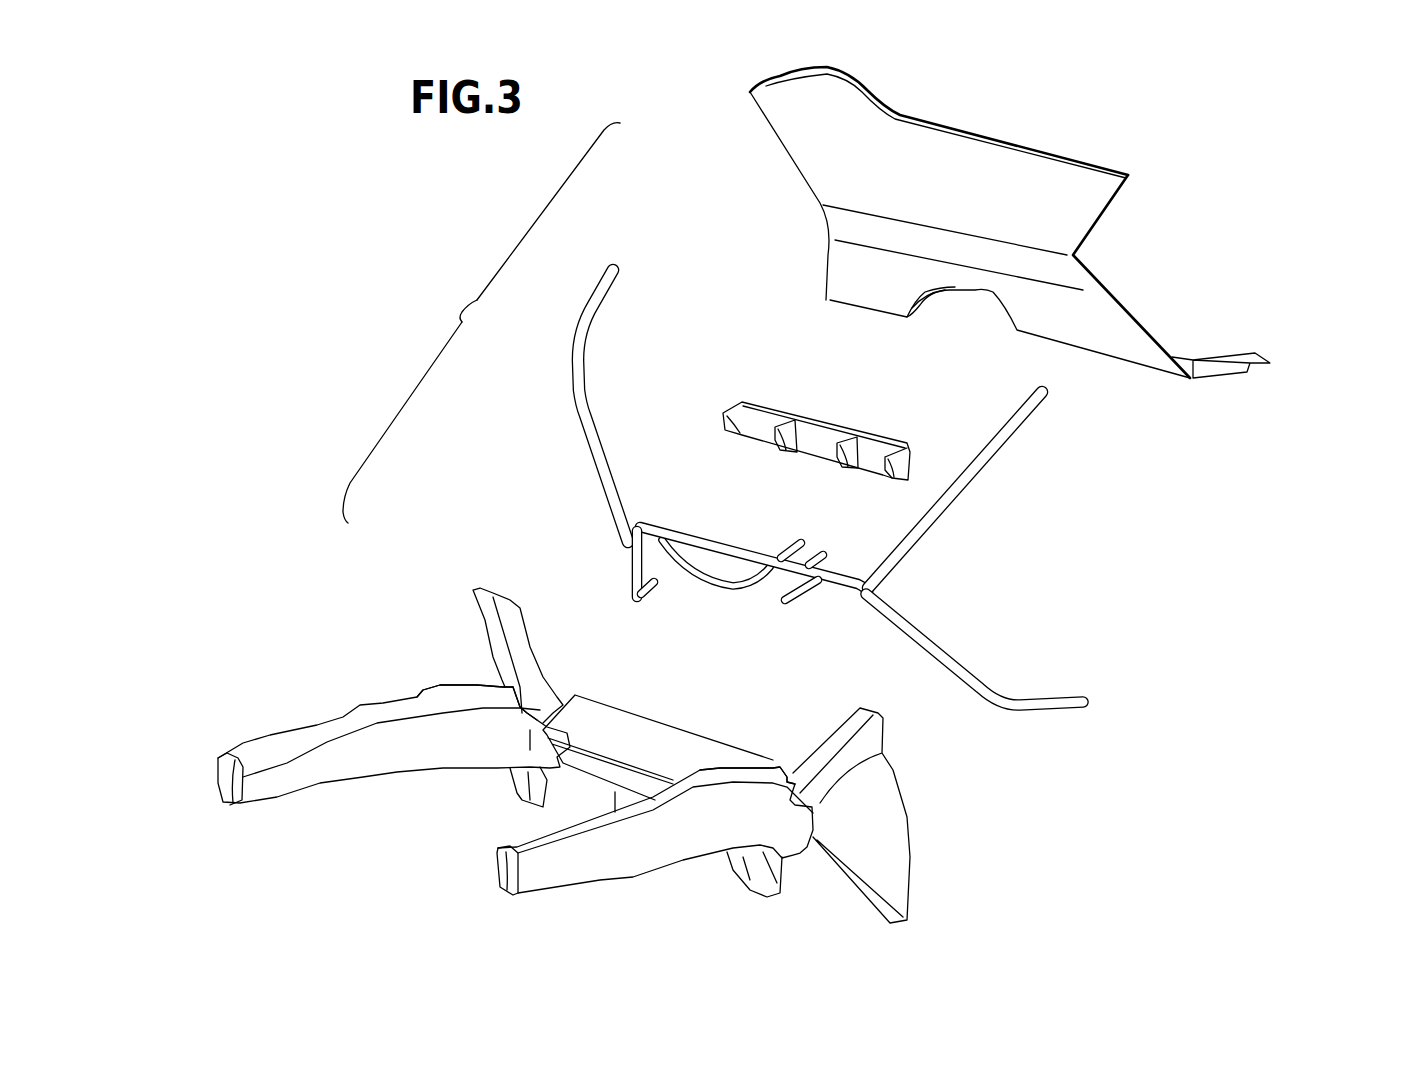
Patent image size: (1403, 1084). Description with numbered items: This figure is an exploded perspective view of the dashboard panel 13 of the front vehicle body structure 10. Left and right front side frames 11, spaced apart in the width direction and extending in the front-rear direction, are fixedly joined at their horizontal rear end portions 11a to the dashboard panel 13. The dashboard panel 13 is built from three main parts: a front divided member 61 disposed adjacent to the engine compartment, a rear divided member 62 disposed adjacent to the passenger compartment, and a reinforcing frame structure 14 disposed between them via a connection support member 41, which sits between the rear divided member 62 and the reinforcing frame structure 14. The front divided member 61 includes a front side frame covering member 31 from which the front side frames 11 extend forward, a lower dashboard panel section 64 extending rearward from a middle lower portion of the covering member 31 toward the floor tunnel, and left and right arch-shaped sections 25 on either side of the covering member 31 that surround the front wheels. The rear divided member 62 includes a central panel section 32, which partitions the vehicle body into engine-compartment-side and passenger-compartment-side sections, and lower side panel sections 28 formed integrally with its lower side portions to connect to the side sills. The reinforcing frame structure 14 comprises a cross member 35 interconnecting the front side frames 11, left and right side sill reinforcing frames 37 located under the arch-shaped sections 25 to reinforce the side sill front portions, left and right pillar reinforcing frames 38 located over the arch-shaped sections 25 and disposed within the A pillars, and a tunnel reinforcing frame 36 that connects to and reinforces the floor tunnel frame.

The front vehicle body structure 10 is at (347, 153).
The front side frames 11 is at (210, 780).
The horizontal rear end portions 11a is at (487, 695).
The dashboard panel 13 is at (450, 305).
The reinforcing frame structure 14 is at (565, 390).
The arch-shaped sections 25 is at (525, 662).
The lower side panel sections 28 is at (1262, 353).
The front side frame covering member 31 is at (687, 750).
The central panel section 32 is at (1130, 177).
The cross member 35 is at (732, 557).
The tunnel reinforcing frame 36 is at (788, 545).
The side sill reinforcing frames 37 is at (628, 565).
The pillar reinforcing frames 38 is at (590, 300).
The connection support member 41 is at (778, 405).
The front divided member 61 is at (482, 567).
The rear divided member 62 is at (745, 157).
The lower dashboard panel section 64 is at (615, 793).